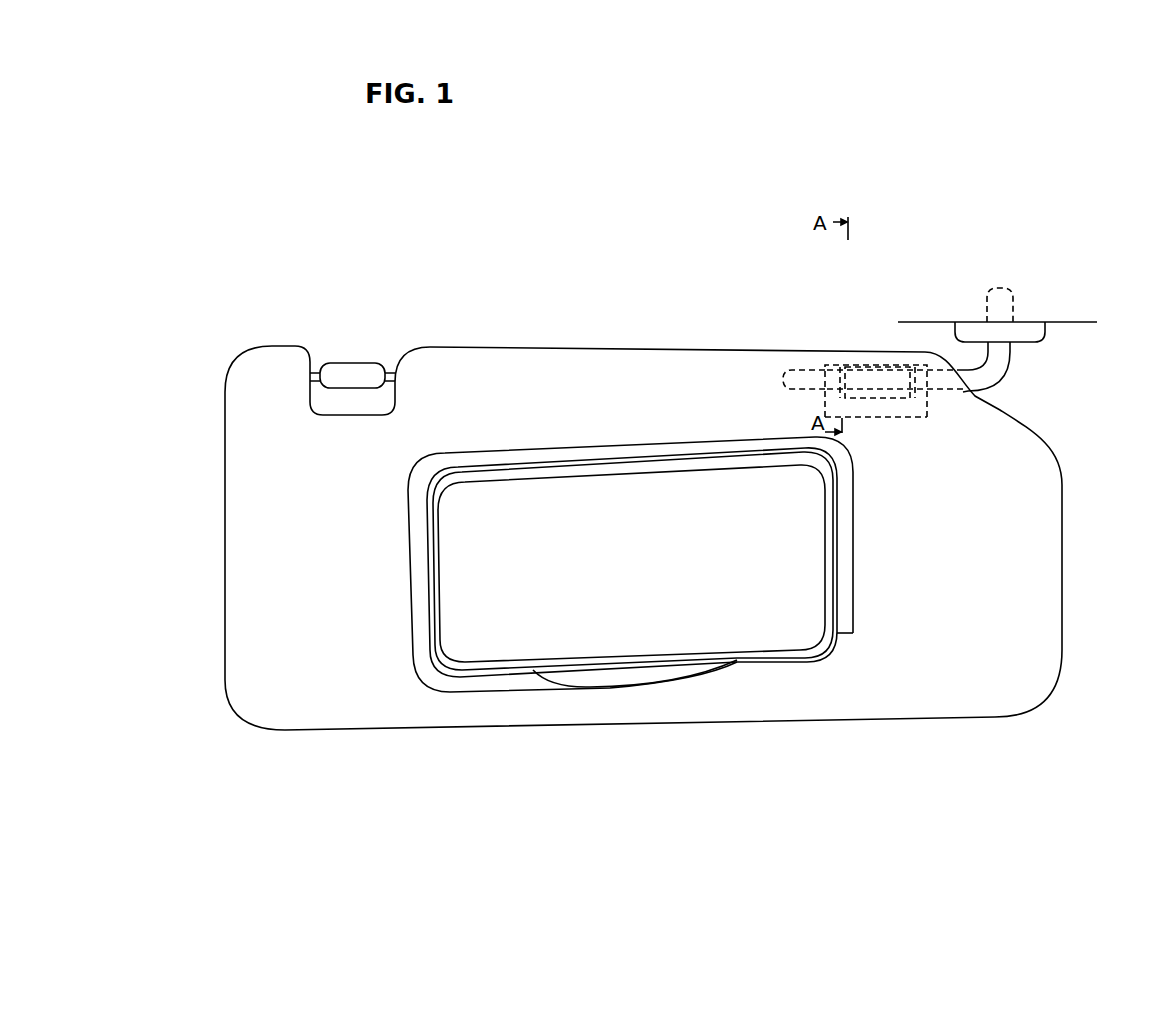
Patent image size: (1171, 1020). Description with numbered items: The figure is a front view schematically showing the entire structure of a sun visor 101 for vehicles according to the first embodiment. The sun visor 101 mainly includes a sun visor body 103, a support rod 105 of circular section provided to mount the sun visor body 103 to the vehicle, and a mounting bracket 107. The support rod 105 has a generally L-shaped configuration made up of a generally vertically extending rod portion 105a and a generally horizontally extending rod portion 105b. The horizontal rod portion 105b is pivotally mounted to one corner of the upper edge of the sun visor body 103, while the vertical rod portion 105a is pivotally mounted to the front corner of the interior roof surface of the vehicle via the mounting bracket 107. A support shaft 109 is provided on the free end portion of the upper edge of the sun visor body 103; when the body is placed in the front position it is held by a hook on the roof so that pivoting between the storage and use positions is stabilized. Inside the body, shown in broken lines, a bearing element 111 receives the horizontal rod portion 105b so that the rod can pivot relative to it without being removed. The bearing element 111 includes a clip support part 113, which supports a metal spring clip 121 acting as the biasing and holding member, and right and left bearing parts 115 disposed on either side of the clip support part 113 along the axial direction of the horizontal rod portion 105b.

The sun visor 101 is at (511, 320).
The sun visor body 103 is at (637, 350).
The support rod 105 is at (1003, 382).
The vertically extending rod portion 105a is at (1010, 355).
The horizontally extending rod portion 105b is at (797, 368).
The mounting bracket 107 is at (1033, 323).
The support shaft 109 is at (345, 363).
The bearing element 111 is at (927, 417).
The clip support part 113 is at (870, 417).
The bearing parts 115 is at (832, 365).
The spring clip 121 is at (888, 365).